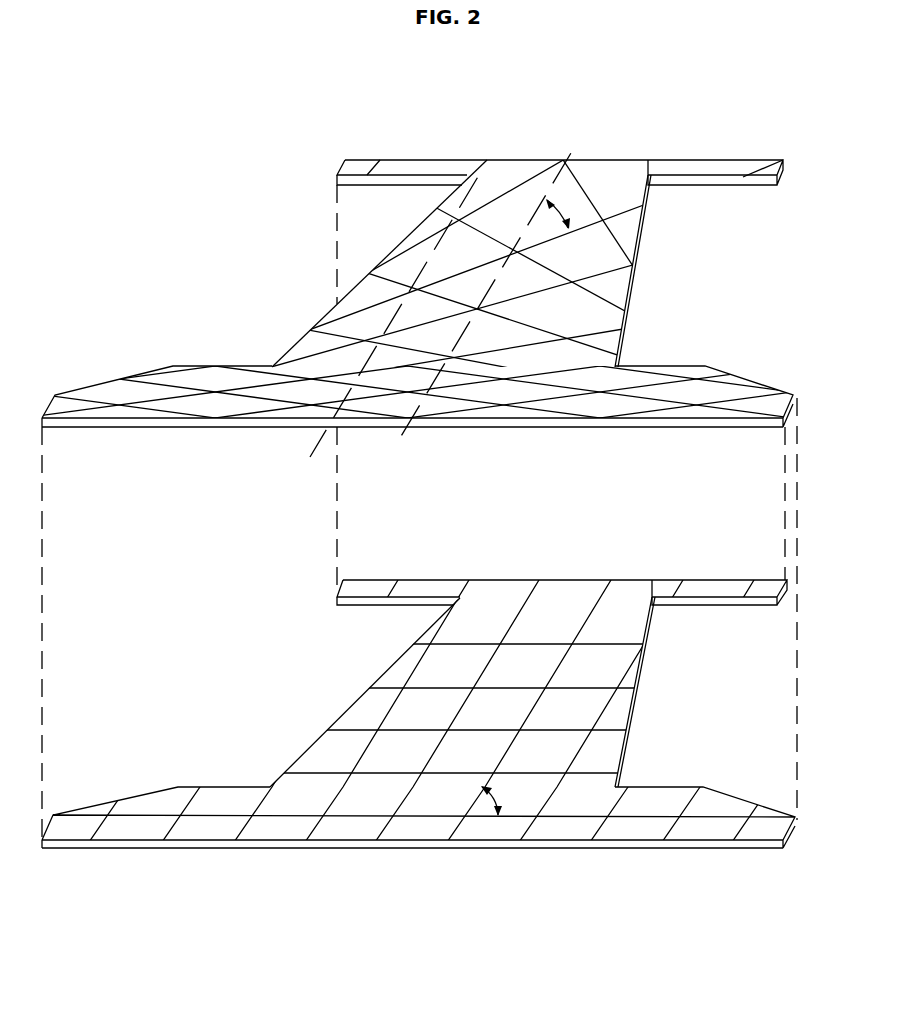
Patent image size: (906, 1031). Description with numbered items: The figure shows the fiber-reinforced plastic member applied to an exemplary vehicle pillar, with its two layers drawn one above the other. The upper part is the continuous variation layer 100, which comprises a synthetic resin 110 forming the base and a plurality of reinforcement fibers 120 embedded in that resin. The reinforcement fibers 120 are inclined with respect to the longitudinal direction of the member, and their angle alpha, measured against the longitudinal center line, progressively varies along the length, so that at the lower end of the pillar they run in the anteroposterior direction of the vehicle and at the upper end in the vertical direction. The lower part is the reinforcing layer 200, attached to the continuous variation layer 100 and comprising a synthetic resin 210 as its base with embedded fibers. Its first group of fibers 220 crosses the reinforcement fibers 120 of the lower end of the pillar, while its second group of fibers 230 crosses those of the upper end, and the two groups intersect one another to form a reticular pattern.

The continuous variation layer 100 is at (306, 304).
The synthetic resin 110 is at (647, 162).
The reinforcement fibers 120 is at (632, 266).
The reinforcing layer 200 is at (308, 718).
The synthetic resin 210 is at (597, 664).
The first group of fibers 220 is at (605, 708).
The second group of fibers 230 is at (527, 775).